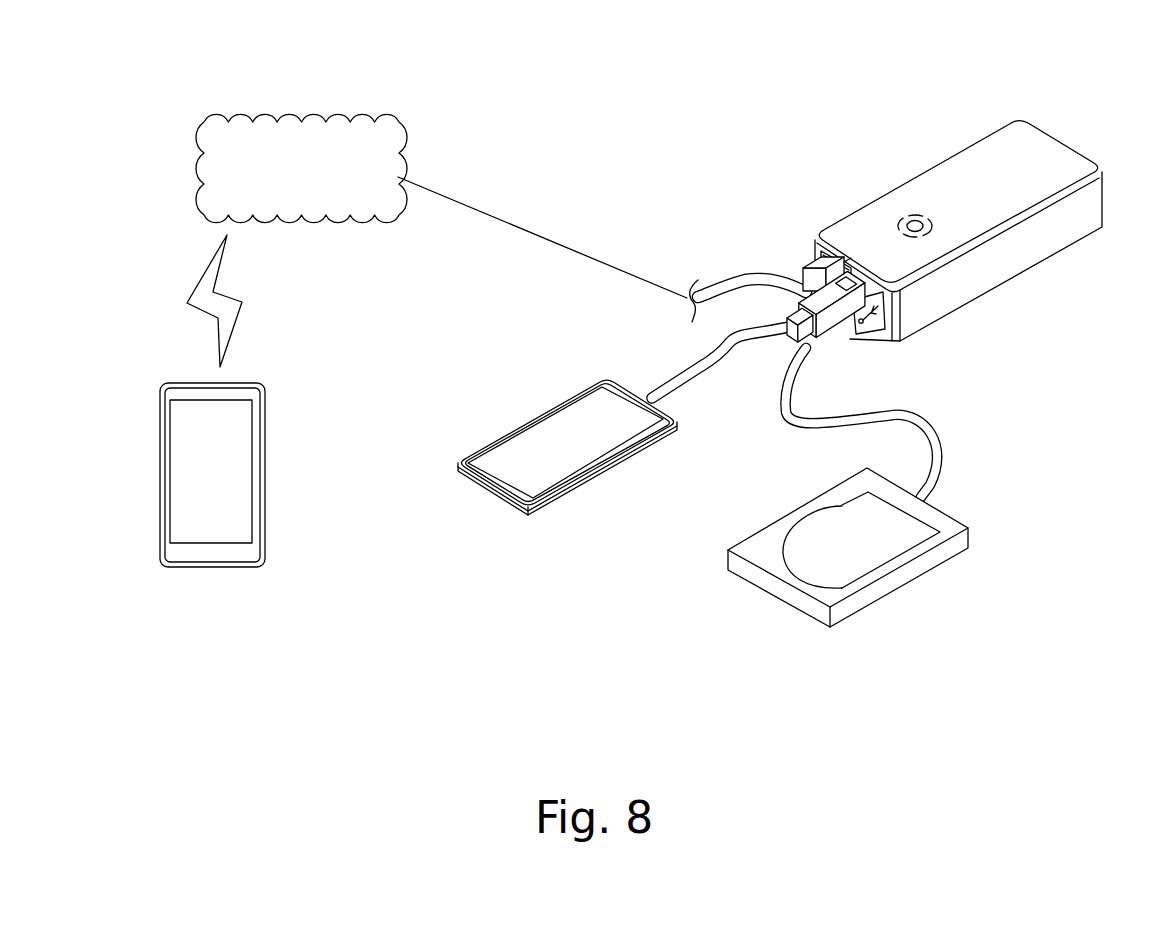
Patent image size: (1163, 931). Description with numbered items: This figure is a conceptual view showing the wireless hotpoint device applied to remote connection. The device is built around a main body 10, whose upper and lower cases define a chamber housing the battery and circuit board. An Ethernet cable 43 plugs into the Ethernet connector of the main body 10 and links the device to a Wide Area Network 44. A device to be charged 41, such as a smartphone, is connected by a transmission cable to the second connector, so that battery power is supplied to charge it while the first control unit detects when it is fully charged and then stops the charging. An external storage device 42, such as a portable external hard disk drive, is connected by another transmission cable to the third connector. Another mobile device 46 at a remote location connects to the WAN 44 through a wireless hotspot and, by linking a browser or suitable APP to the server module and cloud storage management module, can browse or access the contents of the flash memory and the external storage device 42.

The main body 10 is at (1091, 142).
The device to be charged 41 is at (553, 462).
The external storage device 42 is at (900, 540).
The Ethernet cable 43 is at (740, 278).
The Wide Area Network (WAN) 44 is at (269, 115).
The mobile device 46 is at (262, 548).